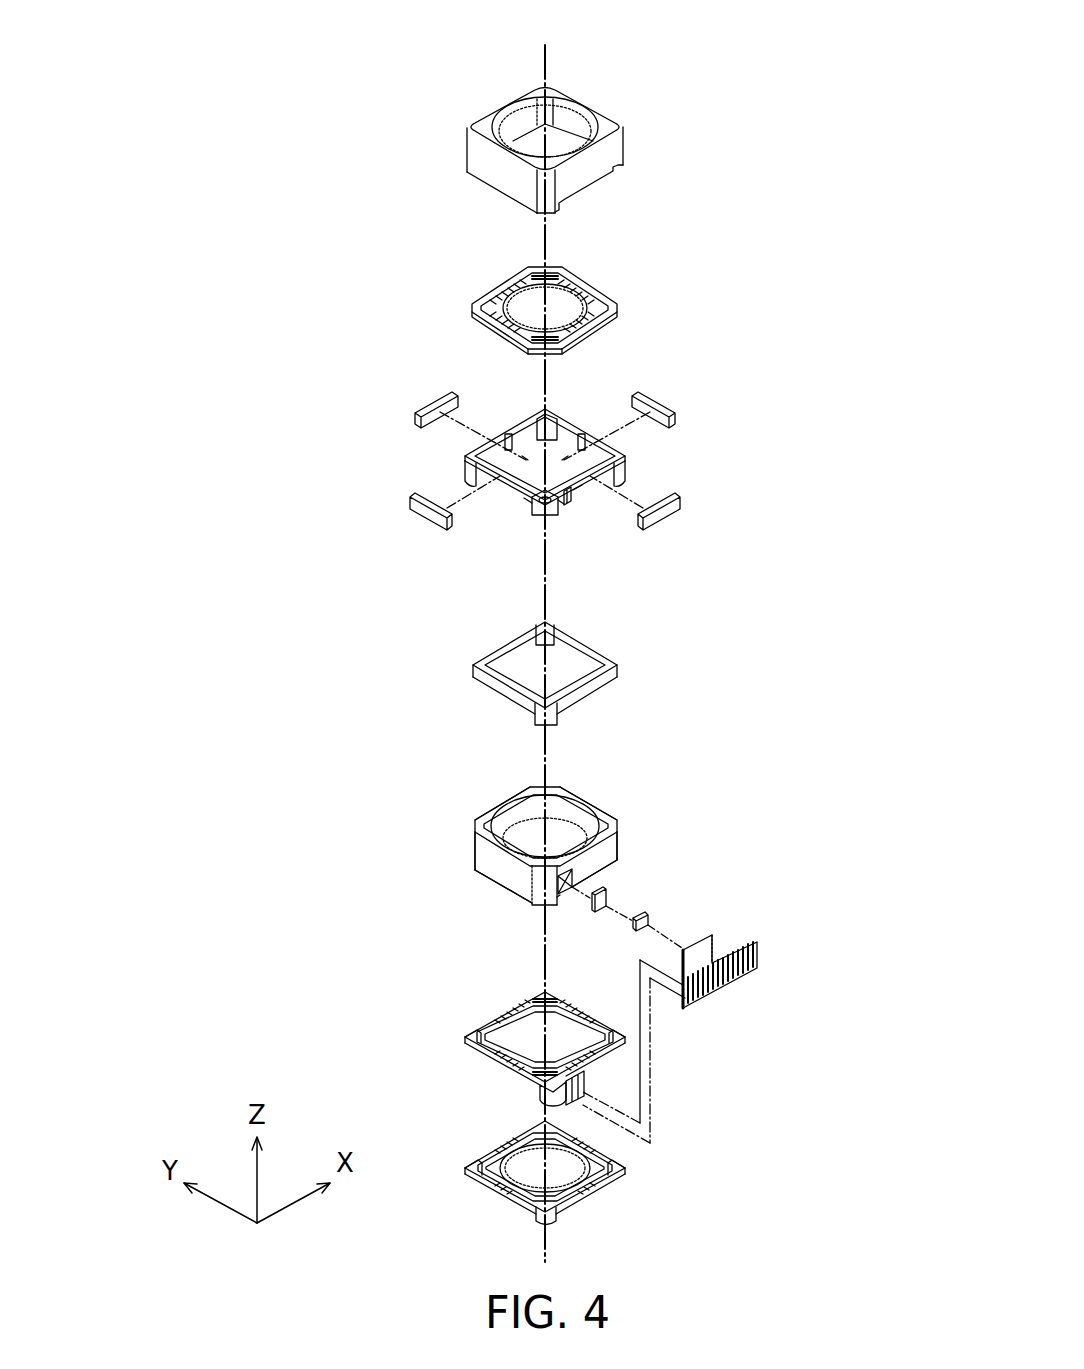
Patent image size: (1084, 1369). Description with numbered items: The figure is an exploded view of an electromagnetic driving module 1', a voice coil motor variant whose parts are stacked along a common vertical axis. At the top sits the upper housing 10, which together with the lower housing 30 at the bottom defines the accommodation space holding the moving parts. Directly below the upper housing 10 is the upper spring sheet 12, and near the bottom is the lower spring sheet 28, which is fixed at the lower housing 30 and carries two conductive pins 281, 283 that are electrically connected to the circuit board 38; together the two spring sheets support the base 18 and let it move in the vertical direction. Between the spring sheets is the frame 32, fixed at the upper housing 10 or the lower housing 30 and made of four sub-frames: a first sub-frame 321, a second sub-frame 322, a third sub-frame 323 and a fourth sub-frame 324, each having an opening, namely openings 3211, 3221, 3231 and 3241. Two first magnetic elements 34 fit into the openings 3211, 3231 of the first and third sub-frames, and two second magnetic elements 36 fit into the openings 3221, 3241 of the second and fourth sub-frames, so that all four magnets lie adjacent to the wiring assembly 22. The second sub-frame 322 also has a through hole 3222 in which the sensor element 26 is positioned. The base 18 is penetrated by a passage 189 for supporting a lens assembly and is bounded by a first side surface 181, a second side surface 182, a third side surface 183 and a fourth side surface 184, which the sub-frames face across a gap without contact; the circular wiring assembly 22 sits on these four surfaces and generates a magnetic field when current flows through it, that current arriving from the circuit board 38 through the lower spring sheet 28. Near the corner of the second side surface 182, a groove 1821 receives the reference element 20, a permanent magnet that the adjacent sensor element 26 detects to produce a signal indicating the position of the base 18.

The electromagnetic driving module 1' is at (794, 44).
The upper housing 10 is at (627, 161).
The upper spring sheet 12 is at (611, 306).
The frame 32 is at (582, 420).
The first sub-frame 321 is at (563, 423).
The opening 3211 is at (614, 438).
The second sub-frame 322 is at (570, 502).
The opening 3221 is at (590, 490).
The through hole 3222 is at (564, 506).
The third sub-frame 323 is at (528, 506).
The opening 3231 is at (508, 498).
The fourth sub-frame 324 is at (526, 430).
The opening 3241 is at (478, 438).
The first magnetic element 34 is at (676, 414).
The second magnetic element 36 is at (416, 414).
The wiring assembly 22 is at (612, 684).
The base 18 is at (618, 848).
The first side surface 181 is at (606, 812).
The second side surface 182 is at (608, 856).
The groove 1821 is at (536, 900).
The third side surface 183 is at (484, 862).
The fourth side surface 184 is at (484, 812).
The passage 189 is at (580, 820).
The reference element 20 is at (604, 914).
The sensor element 26 is at (642, 934).
The circuit board 38 is at (760, 956).
The lower spring sheet 28 is at (470, 1038).
The conductive pin 281 is at (542, 1096).
The conductive pin 283 is at (550, 1088).
The lower housing 30 is at (630, 1168).